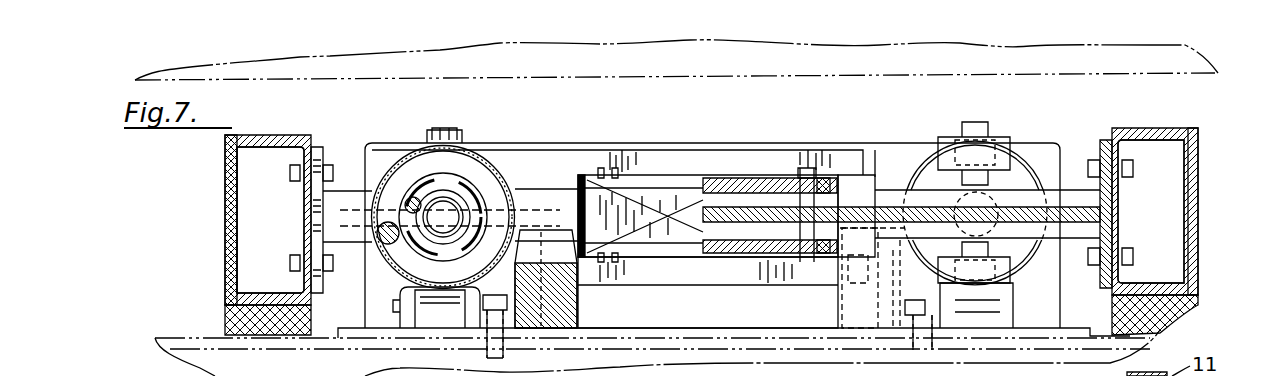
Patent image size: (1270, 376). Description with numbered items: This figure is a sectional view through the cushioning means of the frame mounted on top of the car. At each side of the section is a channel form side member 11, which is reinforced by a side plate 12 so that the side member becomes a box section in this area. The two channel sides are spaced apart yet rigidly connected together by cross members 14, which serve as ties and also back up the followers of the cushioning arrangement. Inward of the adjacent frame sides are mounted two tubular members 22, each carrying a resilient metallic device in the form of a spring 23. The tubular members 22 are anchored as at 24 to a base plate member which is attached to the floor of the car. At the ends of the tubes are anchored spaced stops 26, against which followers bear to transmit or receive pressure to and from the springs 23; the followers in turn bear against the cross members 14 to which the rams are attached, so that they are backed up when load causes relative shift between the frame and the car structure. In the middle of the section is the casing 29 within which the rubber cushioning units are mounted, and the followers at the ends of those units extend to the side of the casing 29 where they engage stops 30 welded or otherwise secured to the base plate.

The channel form side member 11 is at (283, 135).
The side plate 12 is at (225, 195).
The cross member 14 is at (337, 193).
The tubular member 22 is at (500, 168).
The spring 23 is at (388, 244).
The anchorage 24 is at (396, 324).
The stop 26 is at (1012, 165).
The casing 29 is at (670, 150).
The stop 30 is at (577, 305).